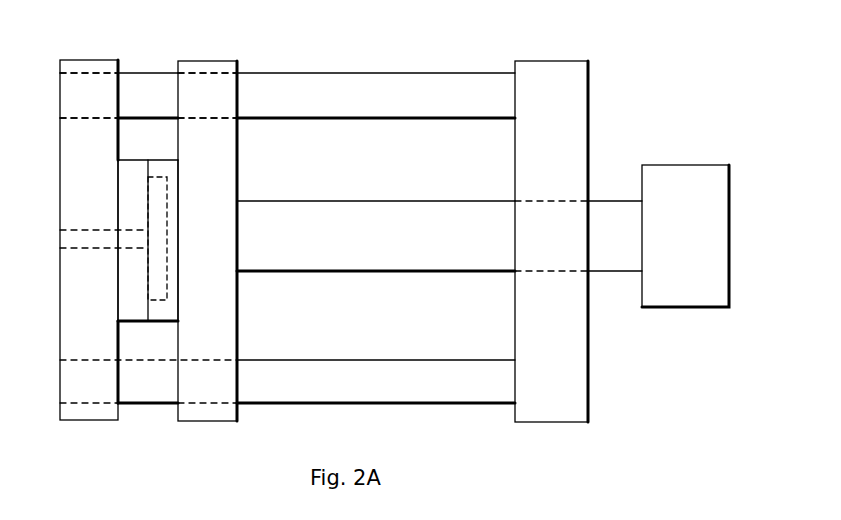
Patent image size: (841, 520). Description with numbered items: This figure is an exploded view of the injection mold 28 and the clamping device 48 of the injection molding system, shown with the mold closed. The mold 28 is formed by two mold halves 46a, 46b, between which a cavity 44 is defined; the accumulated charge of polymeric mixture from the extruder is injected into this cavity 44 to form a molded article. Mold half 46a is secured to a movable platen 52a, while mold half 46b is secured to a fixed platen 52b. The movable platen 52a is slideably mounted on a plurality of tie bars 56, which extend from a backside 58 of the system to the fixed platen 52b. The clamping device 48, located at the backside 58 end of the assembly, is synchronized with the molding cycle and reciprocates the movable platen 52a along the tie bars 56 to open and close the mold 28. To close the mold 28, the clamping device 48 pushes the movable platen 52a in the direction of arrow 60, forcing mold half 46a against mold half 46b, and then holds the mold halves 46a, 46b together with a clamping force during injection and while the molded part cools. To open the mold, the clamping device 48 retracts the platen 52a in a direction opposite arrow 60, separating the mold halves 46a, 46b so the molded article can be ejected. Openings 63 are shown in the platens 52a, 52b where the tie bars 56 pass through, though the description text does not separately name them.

The fixed platen 52b is at (83, 59).
The movable platen 52a is at (190, 422).
The openings 63 is at (78, 118).
The mold half 46b is at (120, 158).
The mold half 46a is at (168, 322).
The cavity 44 is at (168, 248).
The injection mold 28 is at (140, 330).
The tie bars 56 is at (410, 118).
The backside 58 is at (580, 134).
The clamping device 48 is at (657, 306).
The arrow 60 is at (153, 23).